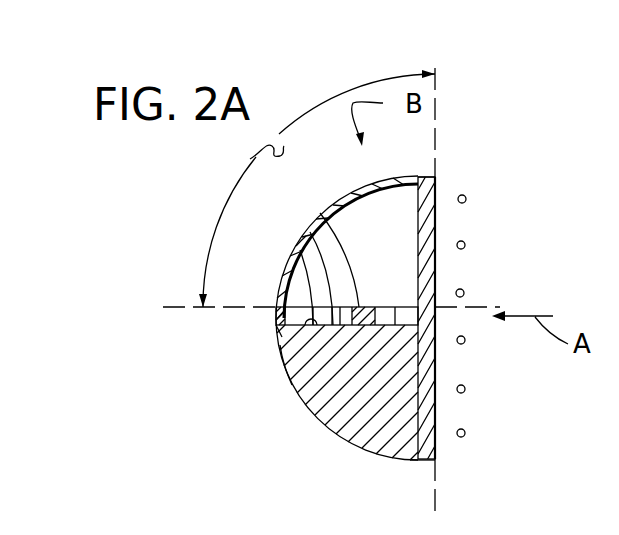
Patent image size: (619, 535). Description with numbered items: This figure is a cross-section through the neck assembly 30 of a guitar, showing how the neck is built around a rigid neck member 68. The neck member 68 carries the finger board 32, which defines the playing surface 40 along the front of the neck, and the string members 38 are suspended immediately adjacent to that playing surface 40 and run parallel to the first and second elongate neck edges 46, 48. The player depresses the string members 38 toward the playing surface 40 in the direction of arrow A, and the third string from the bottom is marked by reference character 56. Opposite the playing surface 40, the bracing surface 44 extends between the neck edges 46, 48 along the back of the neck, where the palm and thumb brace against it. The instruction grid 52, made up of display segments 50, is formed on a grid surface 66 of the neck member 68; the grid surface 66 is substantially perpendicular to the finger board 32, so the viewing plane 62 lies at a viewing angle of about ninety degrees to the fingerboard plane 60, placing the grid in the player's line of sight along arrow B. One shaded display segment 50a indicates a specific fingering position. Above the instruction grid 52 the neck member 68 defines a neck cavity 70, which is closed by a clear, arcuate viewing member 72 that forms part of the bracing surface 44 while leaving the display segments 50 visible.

The neck assembly 30 is at (349, 186).
The finger board 32 is at (437, 228).
The string members 38 is at (466, 432).
The playing surface 40 is at (437, 266).
The bracing surface 44 is at (303, 419).
The first elongate neck edge 46 is at (436, 460).
The second elongate neck edge 48 is at (436, 177).
The display segments 50 is at (290, 242).
The shaded display segment 50a is at (312, 225).
The instruction grid 52 is at (378, 298).
The string location 56 is at (478, 340).
The fingerboard plane 60 is at (437, 100).
The viewing plane 62 is at (177, 306).
The grid surface 66 is at (282, 337).
The neck member 68 is at (277, 382).
The neck cavity 70 is at (300, 297).
The viewing member 72 is at (286, 262).